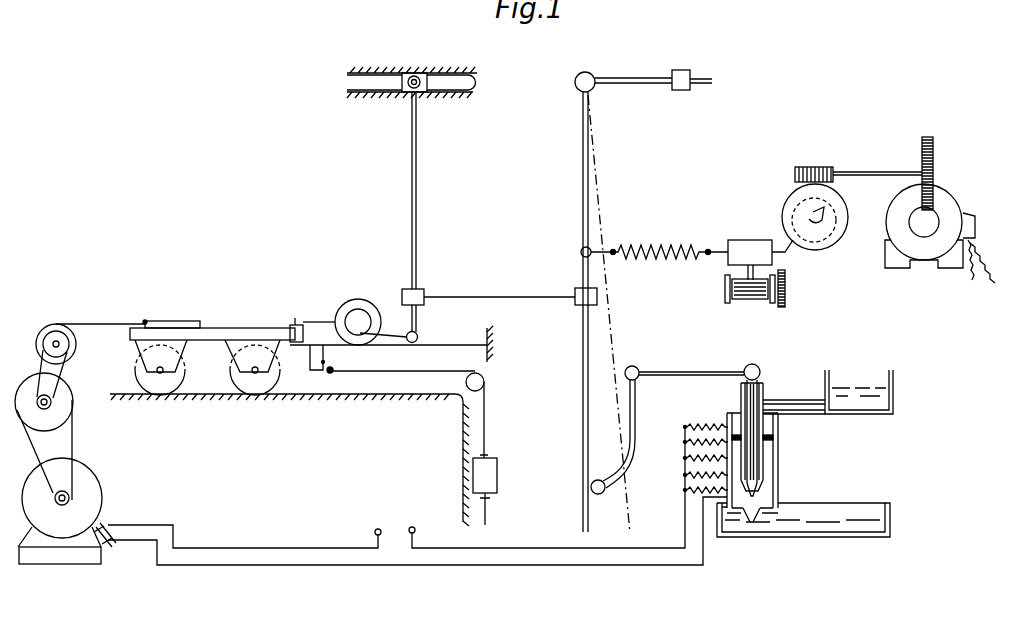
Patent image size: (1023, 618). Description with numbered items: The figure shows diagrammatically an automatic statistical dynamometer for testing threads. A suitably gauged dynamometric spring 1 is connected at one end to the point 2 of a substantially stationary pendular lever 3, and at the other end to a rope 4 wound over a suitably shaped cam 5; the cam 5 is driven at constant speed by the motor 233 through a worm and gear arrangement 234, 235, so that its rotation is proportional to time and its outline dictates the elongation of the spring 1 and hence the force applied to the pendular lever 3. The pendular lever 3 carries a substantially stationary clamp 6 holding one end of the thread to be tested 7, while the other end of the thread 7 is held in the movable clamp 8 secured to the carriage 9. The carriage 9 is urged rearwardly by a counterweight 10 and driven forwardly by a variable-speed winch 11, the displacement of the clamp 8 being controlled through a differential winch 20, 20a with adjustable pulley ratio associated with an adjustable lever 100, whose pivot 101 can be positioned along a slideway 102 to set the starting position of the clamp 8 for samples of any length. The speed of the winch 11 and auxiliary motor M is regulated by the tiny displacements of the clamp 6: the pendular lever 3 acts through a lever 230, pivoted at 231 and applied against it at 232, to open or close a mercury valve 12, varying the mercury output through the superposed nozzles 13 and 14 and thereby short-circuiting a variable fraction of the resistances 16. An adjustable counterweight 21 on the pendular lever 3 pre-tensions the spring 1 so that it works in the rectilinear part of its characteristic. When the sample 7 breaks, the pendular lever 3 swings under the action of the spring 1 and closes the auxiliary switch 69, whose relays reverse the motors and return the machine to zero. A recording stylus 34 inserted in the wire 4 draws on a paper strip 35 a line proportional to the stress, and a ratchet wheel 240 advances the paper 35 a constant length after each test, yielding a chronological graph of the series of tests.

The dynamometric spring 1 is at (660, 250).
The point 2 is at (581, 252).
The pendular lever 3 is at (587, 168).
The rope 4 is at (779, 254).
The cam 5 is at (825, 235).
The clamp 6 is at (577, 304).
The thread to be tested 7 is at (494, 297).
The movable clamp 8 is at (418, 295).
The carriage 9 is at (208, 337).
The counterweight 10 is at (489, 475).
The winch 11 is at (38, 347).
The mercury valve 12 is at (764, 485).
The nozzle 13 is at (764, 495).
The nozzle 14 is at (748, 527).
The resistances 16 is at (678, 476).
The differential winch 20 is at (345, 300).
The differential winch 20a is at (362, 312).
The adjustable counterweight 21 is at (682, 70).
The recording stylus 34 is at (750, 240).
The paper strip 35 is at (752, 300).
The auxiliary switch 69 is at (643, 516).
The lever 100 is at (414, 200).
The pivot 101 is at (428, 70).
The slideway 102 is at (353, 78).
The lever 230 is at (690, 376).
The pivot 231 is at (634, 369).
The contact point 232 is at (595, 492).
The motor 233 is at (953, 210).
The worm 234 is at (935, 150).
The gear 235 is at (820, 165).
The ratchet wheel 240 is at (787, 300).
The auxiliary motor M is at (102, 500).